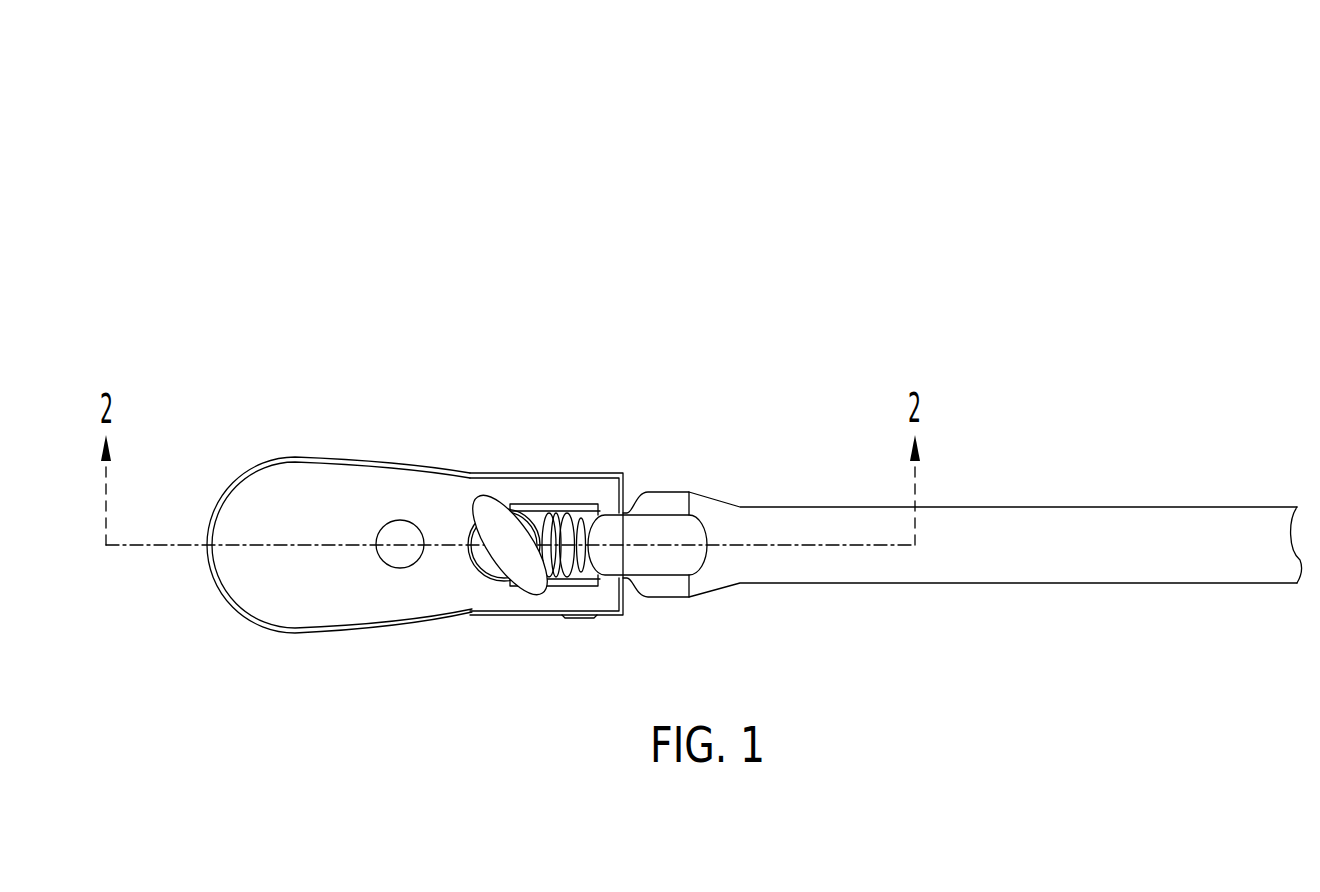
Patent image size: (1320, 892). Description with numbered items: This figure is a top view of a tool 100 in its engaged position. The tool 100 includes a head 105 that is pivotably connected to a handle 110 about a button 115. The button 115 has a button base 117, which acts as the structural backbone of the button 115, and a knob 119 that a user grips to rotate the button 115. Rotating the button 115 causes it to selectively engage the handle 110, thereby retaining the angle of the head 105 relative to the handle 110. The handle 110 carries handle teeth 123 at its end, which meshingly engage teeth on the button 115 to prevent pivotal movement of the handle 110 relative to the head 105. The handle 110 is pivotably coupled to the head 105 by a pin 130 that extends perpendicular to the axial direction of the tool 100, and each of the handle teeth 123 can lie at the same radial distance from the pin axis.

The tool 100 is at (192, 188).
The head 105 is at (263, 482).
The handle 110 is at (1193, 527).
The button 115 is at (470, 485).
The button base 117 is at (527, 508).
The knob 119 is at (512, 557).
The handle teeth 123 is at (590, 578).
The pin 130 is at (582, 618).